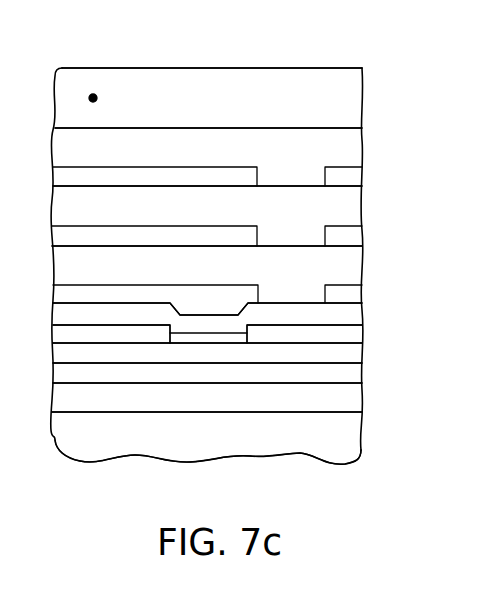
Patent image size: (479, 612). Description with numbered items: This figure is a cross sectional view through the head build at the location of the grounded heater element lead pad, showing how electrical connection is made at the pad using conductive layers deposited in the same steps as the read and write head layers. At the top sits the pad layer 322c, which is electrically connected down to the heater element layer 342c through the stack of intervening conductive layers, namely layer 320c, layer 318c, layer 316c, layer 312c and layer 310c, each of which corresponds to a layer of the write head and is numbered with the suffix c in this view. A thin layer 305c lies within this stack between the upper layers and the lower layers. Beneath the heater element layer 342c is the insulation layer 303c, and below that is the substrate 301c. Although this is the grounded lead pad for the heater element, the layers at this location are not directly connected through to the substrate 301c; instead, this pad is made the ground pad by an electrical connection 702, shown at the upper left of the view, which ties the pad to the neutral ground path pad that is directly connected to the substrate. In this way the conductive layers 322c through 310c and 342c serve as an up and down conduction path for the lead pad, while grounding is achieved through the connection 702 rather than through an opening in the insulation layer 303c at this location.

The electrical connection 702 is at (93, 98).
The pad layer 322c is at (333, 100).
The layer 320c is at (340, 147).
The layer 318c is at (340, 208).
The layer 316c is at (337, 265).
The layer 312c is at (355, 315).
The thin layer 305c is at (355, 330).
The layer 310c is at (355, 356).
The heater element layer 342c is at (355, 375).
The insulation layer 303c is at (345, 400).
The substrate 301c is at (330, 428).